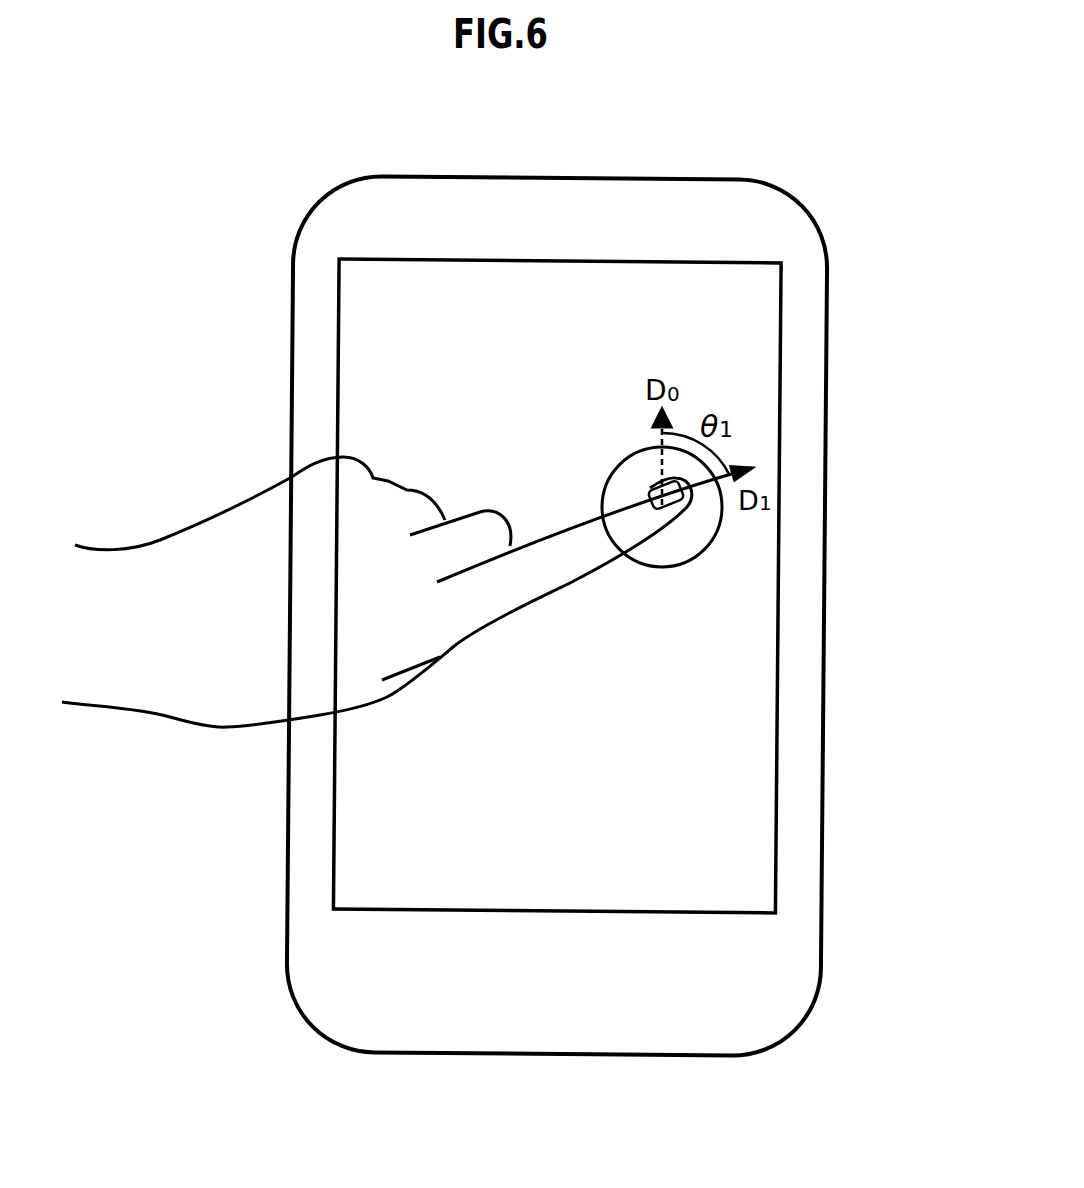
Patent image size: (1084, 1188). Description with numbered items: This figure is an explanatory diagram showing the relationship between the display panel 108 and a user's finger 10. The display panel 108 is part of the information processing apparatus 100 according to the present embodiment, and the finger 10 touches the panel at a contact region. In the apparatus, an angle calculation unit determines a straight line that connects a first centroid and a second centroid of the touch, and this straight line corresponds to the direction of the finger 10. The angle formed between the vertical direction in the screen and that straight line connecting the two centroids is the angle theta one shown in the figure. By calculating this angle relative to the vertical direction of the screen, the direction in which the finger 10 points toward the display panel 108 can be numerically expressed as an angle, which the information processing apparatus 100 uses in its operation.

The finger 10 is at (565, 533).
The information processing apparatus 100 is at (827, 398).
The display panel 108 is at (782, 325).